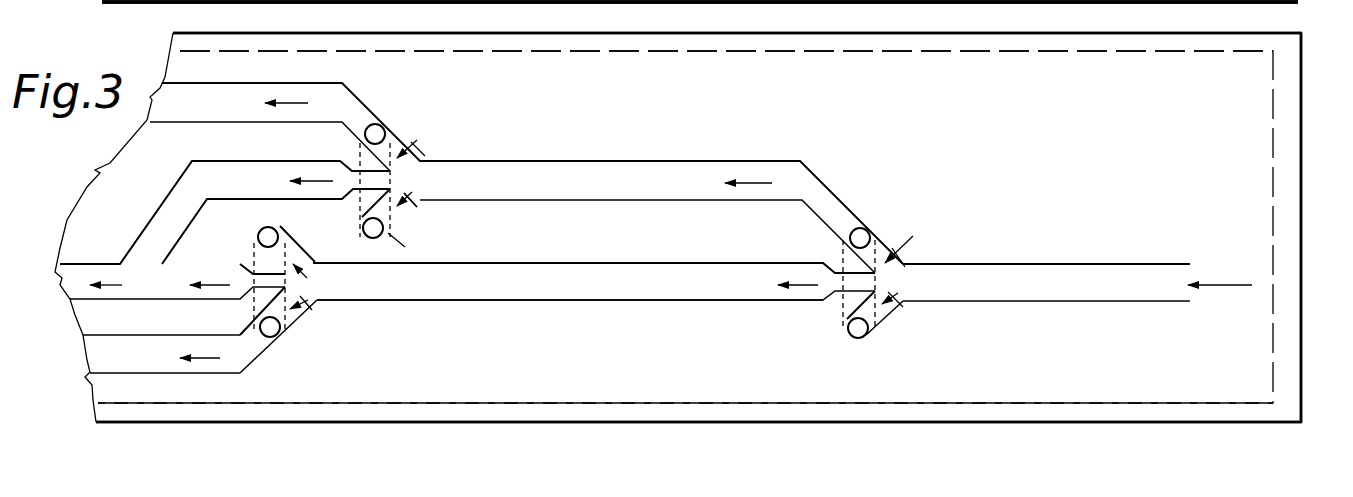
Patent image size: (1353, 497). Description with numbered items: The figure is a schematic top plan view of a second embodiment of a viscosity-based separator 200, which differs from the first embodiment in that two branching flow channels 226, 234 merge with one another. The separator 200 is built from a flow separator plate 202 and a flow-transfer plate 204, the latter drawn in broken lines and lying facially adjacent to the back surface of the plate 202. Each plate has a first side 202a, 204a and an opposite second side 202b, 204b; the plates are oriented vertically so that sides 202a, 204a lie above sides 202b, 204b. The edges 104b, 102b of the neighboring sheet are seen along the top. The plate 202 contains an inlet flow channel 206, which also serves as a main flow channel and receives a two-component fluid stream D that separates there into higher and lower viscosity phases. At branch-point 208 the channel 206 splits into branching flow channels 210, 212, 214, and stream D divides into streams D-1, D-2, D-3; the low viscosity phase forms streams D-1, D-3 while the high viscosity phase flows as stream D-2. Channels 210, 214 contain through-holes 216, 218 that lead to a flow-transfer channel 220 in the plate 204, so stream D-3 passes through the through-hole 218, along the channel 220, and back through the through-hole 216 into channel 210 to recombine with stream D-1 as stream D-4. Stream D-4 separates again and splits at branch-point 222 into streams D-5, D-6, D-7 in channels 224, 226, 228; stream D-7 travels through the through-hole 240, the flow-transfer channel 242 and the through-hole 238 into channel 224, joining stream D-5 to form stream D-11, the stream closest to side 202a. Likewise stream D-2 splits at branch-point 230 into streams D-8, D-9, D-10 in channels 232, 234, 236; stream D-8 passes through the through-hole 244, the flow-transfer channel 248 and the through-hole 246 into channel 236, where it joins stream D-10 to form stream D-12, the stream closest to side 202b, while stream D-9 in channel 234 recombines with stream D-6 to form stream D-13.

The separator 200 is at (1230, 31).
The flow separator plate 202 is at (1300, 97).
The flow-transfer plate 204 is at (1273, 128).
The first side of flow separator plate 202a is at (777, 33).
The second side of flow separator plate 202b is at (1068, 423).
The first side of flow-transfer plate 204a is at (1053, 50).
The second side of flow-transfer plate 204b is at (1170, 405).
The edge of plate 104b is at (913, 3).
The edge of plate 102b is at (1057, 3).
The inlet flow channel 206 is at (1100, 265).
The branch-point 208 is at (912, 283).
The branching flow channel 210 is at (813, 174).
The branching flow channel 212 is at (730, 249).
The branching flow channel 214 is at (890, 320).
The through-hole 216 is at (863, 226).
The through-hole 218 is at (849, 331).
The flow-transfer channel 220 is at (842, 256).
The branch-point 222 is at (432, 180).
The branching flow channel 224 is at (351, 94).
The branching flow channel 226 is at (250, 168).
The branching flow channel 228 is at (408, 217).
The branch-point 230 is at (328, 284).
The branching flow channel 232 is at (362, 230).
The branching flow channel 234 is at (155, 297).
The branching flow channel 236 is at (303, 318).
The through-hole 238 is at (383, 125).
The through-hole 240 is at (426, 249).
The flow-transfer channel 242 is at (360, 202).
The through-hole 244 is at (259, 228).
The through-hole 246 is at (277, 337).
The flow-transfer channel 248 is at (253, 261).
The two-component fluid stream D is at (1236, 285).
The stream D-1 is at (909, 240).
The stream D-2 is at (808, 286).
The stream D-3 is at (904, 307).
The stream D-4 is at (758, 183).
The stream D-5 is at (427, 137).
The stream D-6 is at (330, 181).
The stream D-7 is at (418, 206).
The stream D-8 is at (315, 265).
The stream D-9 is at (212, 286).
The stream D-10 is at (329, 312).
The stream D-11 is at (302, 103).
The stream D-12 is at (207, 359).
The stream D-13 is at (110, 283).